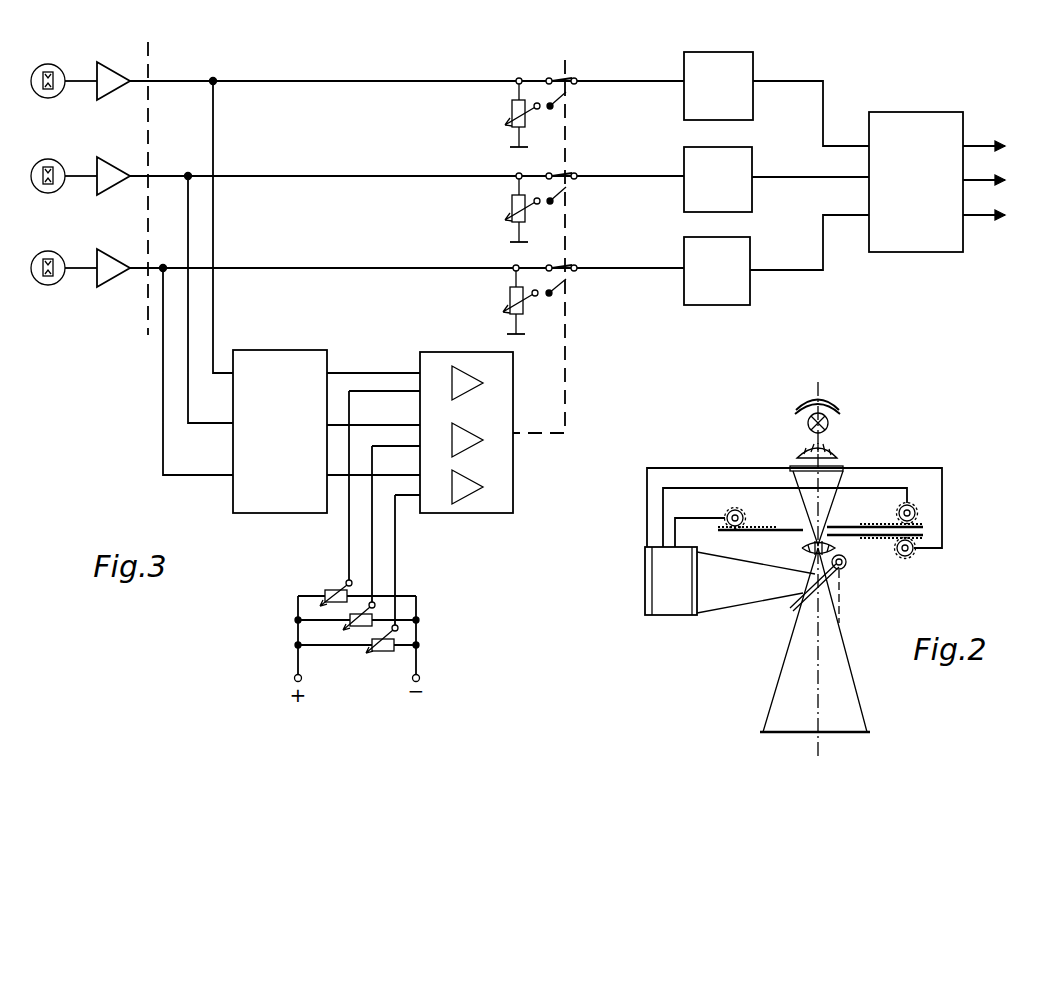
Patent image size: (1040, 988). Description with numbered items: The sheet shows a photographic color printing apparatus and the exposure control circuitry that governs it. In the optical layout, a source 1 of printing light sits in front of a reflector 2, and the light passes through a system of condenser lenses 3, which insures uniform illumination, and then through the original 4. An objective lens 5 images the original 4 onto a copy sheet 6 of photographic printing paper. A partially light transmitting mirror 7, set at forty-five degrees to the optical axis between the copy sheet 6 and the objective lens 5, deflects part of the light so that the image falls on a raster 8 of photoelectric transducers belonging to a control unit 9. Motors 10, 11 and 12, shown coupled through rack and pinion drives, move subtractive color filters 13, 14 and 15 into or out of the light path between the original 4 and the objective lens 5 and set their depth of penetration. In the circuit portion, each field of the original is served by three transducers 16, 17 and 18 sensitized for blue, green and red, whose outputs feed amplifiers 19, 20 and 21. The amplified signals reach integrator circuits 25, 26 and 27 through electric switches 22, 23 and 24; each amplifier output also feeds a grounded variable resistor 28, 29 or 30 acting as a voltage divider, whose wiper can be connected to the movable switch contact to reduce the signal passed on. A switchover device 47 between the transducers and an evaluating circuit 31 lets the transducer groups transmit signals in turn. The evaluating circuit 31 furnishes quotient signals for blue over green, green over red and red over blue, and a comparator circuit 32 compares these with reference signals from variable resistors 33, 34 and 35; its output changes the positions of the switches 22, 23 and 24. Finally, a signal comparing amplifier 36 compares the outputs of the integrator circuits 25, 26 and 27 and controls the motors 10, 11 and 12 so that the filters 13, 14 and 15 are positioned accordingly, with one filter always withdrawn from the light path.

In FIG. 2, the source of printing light 1 is at (828, 428).
In FIG. 2, the reflector 2 is at (830, 404).
In FIG. 2, the system of condenser lenses 3 is at (797, 456).
In FIG. 2, the original 4 is at (843, 468).
In FIG. 2, the objective lens 5 is at (802, 548).
In FIG. 2, the copy sheet 6 is at (855, 734).
In FIG. 2, the partially light transmitting mirror 7 is at (790, 608).
In FIG. 2, the raster of photoelectric transducers 8 is at (697, 615).
In FIG. 2, the control unit 9 is at (648, 615).
In FIG. 3, the motor 10 is at (999, 136).
In FIG. 2, the motor 10 is at (725, 510).
In FIG. 3, the motor 11 is at (999, 172).
In FIG. 2, the motor 11 is at (915, 507).
In FIG. 3, the motor 12 is at (999, 205).
In FIG. 2, the motor 12 is at (910, 556).
In FIG. 2, the subtractive color filter 13 is at (785, 525).
In FIG. 2, the subtractive color filter 14 is at (855, 538).
In FIG. 2, the subtractive color filter 15 is at (846, 524).
In FIG. 3, the photoelectric transducer 16 is at (48, 285).
In FIG. 3, the photoelectric transducer 17 is at (48, 193).
In FIG. 3, the photoelectric transducer 18 is at (48, 98).
In FIG. 3, the amplifier 19 is at (112, 279).
In FIG. 3, the amplifier 20 is at (112, 187).
In FIG. 3, the amplifier 21 is at (112, 92).
In FIG. 3, the electric switch 22 is at (574, 265).
In FIG. 3, the electric switch 23 is at (572, 182).
In FIG. 3, the electric switch 24 is at (574, 78).
In FIG. 3, the integrator circuit 25 is at (715, 305).
In FIG. 3, the integrator circuit 26 is at (745, 200).
In FIG. 3, the integrator circuit 27 is at (748, 104).
In FIG. 3, the variable resistor 28 is at (508, 293).
In FIG. 3, the variable resistor 29 is at (511, 201).
In FIG. 3, the variable resistor 30 is at (511, 106).
In FIG. 3, the evaluating circuit 31 is at (262, 513).
In FIG. 3, the comparator circuit 32 is at (513, 495).
In FIG. 3, the variable resistor 33 is at (340, 593).
In FIG. 3, the variable resistor 34 is at (357, 626).
In FIG. 3, the variable resistor 35 is at (380, 651).
In FIG. 3, the signal comparing amplifier 36 is at (910, 112).
In FIG. 3, the switchover device 47 is at (153, 64).